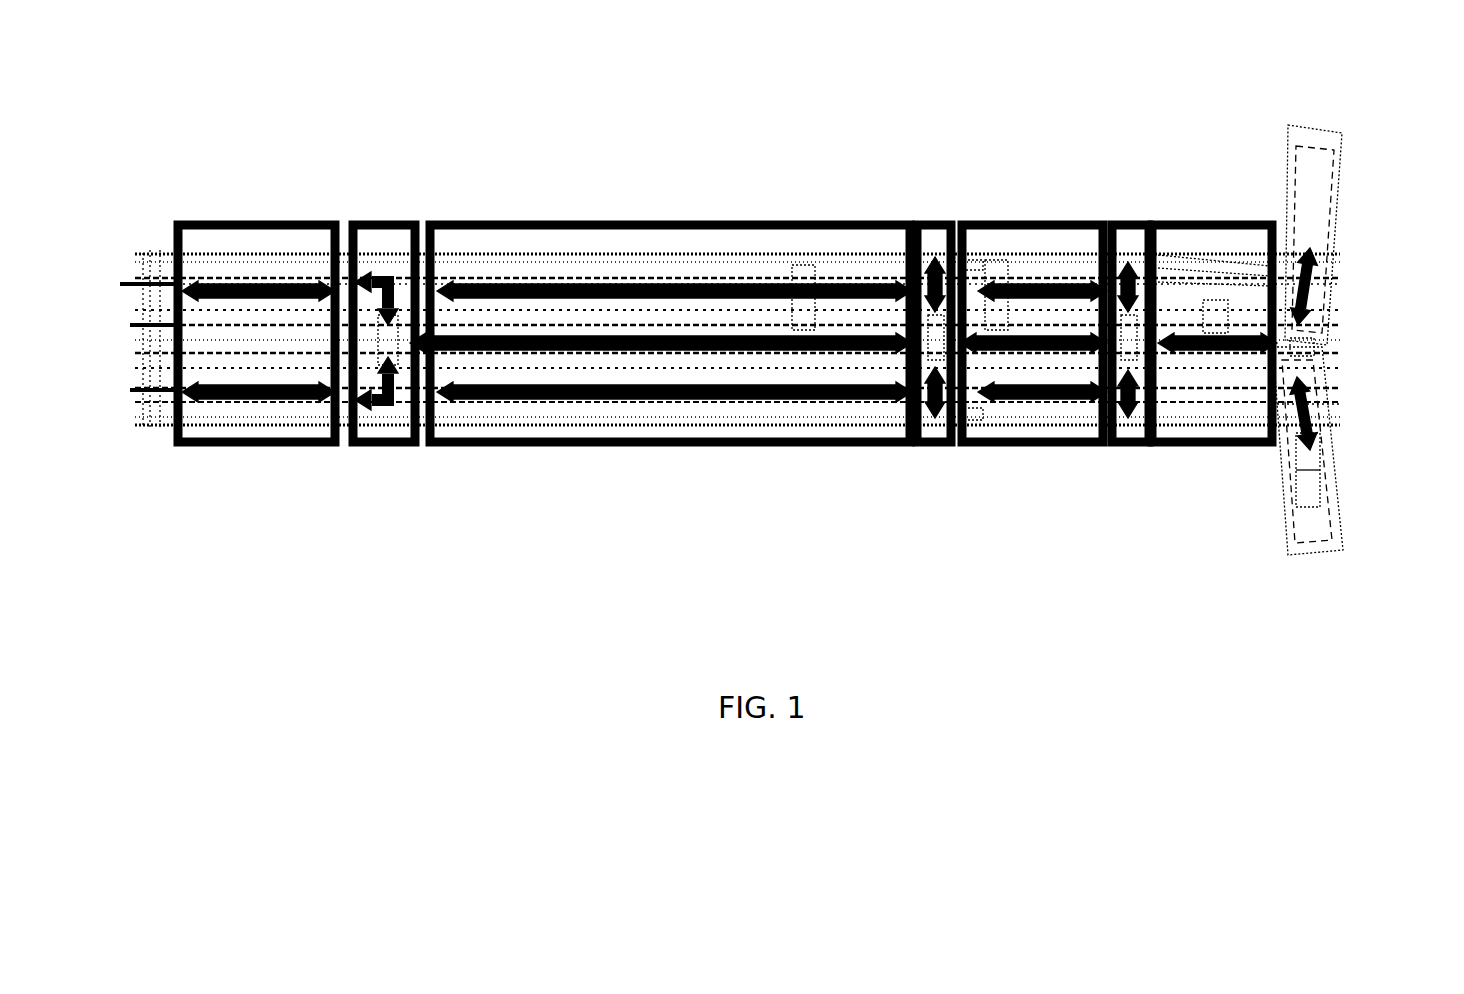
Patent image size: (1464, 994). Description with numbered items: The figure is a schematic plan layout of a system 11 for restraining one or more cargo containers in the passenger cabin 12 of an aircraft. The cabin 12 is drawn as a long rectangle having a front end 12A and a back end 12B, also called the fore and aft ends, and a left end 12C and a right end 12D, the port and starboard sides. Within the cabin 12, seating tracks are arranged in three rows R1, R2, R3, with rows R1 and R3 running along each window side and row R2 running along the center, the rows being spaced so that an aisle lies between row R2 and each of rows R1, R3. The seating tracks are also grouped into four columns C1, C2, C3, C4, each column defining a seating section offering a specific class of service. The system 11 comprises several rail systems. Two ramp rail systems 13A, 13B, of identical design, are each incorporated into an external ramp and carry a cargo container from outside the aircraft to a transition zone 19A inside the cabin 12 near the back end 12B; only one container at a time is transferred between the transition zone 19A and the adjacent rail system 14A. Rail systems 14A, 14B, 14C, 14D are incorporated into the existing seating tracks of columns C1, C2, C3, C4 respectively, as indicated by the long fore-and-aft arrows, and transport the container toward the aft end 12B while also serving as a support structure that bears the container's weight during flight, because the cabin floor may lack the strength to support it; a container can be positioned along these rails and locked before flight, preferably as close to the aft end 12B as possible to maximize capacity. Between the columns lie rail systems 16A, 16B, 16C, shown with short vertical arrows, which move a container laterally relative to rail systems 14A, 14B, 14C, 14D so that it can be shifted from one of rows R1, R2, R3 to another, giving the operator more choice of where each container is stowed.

The system 11 is at (338, 88).
The passenger cabin 12 is at (832, 262).
The front end 12A is at (150, 253).
The back end 12B is at (1340, 404).
The left end 12C is at (792, 252).
The right end 12D is at (779, 425).
The rail system 13A is at (1318, 545).
The rail system 13B is at (1320, 133).
The rail system 14A is at (1212, 222).
The rail system 14B is at (1028, 222).
The rail system 14C is at (670, 222).
The rail system 14D is at (264, 222).
The rail system 16A is at (1122, 222).
The rail system 16B is at (934, 222).
The rail system 16C is at (378, 222).
The transition zone 19A is at (1313, 350).
The column C1 is at (1217, 375).
The column C2 is at (1052, 410).
The column C3 is at (663, 435).
The column C4 is at (258, 435).
The row R1 is at (131, 289).
The row R2 is at (136, 329).
The row R3 is at (137, 393).